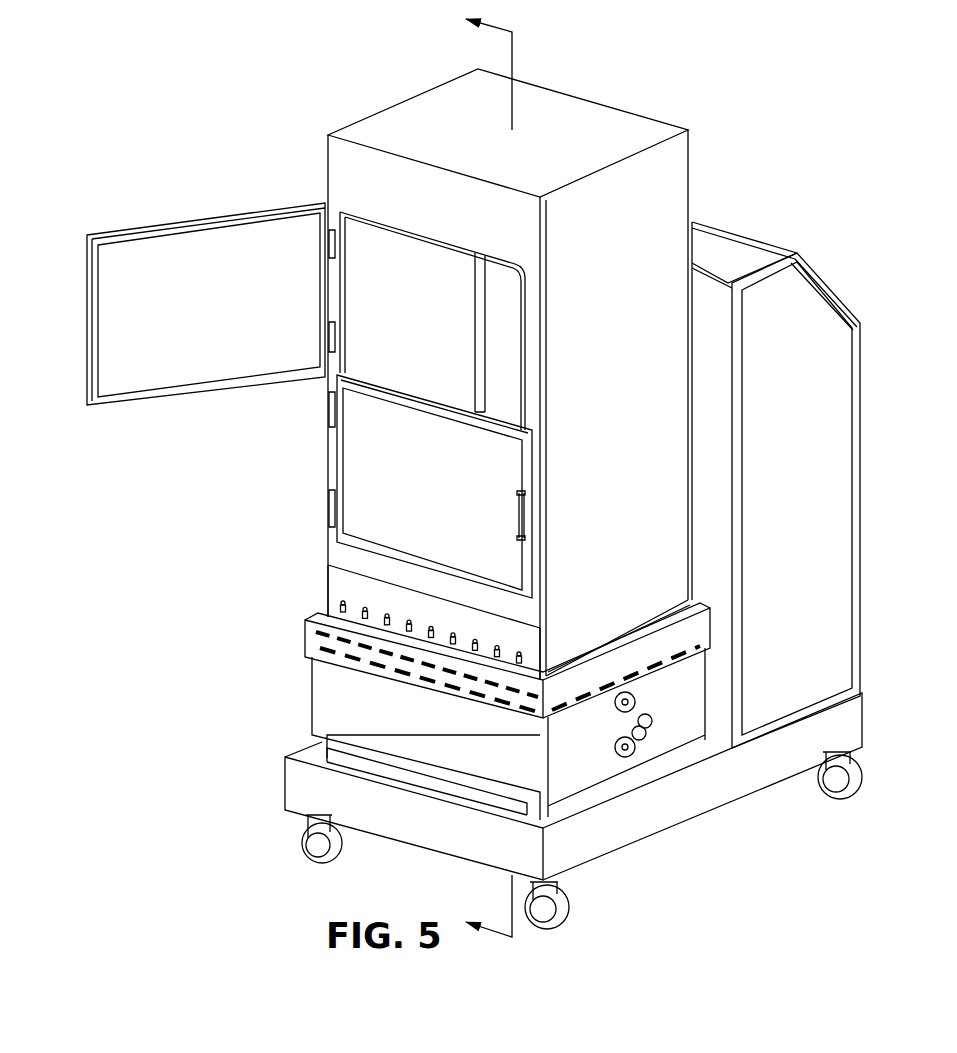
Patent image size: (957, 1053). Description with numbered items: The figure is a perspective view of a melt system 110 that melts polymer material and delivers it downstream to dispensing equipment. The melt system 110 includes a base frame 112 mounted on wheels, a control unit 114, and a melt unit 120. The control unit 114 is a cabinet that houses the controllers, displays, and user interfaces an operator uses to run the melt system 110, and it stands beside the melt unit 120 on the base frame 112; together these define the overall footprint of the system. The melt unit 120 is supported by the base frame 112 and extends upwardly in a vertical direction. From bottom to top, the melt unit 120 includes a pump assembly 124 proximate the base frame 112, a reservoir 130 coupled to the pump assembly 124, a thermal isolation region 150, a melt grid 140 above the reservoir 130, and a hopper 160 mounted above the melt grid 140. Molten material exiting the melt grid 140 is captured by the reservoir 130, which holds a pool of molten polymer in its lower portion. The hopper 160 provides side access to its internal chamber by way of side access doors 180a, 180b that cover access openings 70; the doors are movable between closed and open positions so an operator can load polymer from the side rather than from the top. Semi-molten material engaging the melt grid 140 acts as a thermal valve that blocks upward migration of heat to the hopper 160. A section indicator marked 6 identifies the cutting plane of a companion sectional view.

The melt system 110 is at (258, 107).
The melt unit 120 is at (450, 115).
The access openings 70 is at (503, 342).
The hopper 160 is at (617, 525).
The side access door 180a is at (84, 272).
The side access door 180b is at (347, 548).
The melt grid 140 is at (325, 590).
The thermal isolation region 150 is at (307, 637).
The reservoir 130 is at (310, 712).
The base frame 112 is at (312, 790).
The pump assembly 124 is at (402, 848).
The control unit 114 is at (776, 485).
The section line 6- 6 is at (476, 469).